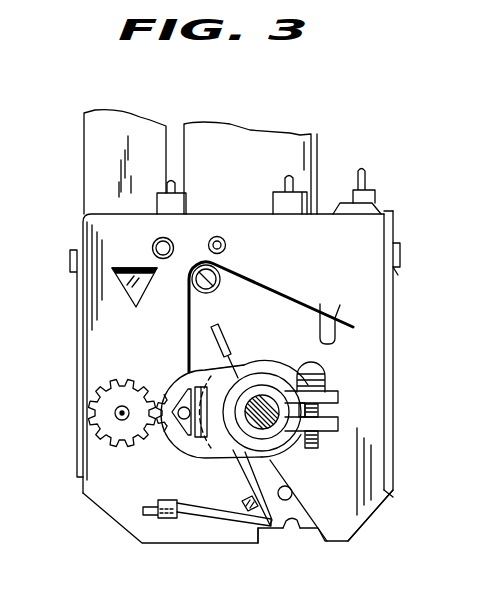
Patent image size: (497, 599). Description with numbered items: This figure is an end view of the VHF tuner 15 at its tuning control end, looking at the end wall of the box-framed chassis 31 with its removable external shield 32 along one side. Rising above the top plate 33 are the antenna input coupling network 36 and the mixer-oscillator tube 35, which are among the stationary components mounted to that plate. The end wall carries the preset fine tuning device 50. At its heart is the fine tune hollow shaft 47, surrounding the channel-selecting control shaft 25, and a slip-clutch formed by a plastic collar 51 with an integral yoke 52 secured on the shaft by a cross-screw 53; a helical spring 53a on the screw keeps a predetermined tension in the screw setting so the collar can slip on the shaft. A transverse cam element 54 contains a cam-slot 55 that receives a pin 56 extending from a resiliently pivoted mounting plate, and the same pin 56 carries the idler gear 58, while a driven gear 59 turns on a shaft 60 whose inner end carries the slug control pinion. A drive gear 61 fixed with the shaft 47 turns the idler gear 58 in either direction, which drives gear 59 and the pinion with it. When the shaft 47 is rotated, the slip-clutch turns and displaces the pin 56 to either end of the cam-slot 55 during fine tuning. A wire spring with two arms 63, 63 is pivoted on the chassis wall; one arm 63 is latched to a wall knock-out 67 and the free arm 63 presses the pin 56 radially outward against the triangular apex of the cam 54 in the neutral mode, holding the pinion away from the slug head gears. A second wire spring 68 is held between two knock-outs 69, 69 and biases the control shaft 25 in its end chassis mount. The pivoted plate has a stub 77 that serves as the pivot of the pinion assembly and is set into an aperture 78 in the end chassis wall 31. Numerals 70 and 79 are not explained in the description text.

The VHF tuner 15 is at (72, 333).
The control shaft 25 is at (264, 406).
The box-framed chassis 31 is at (353, 521).
The removable external shield 32 is at (398, 390).
The top plate 33 is at (240, 200).
The mixer-oscillator tube 35 is at (307, 158).
The antenna input coupling network 36 is at (88, 142).
The fine tune hollow shaft 47 is at (256, 390).
The preset fine tuning device 50 is at (178, 362).
The collar 51 is at (288, 434).
The yoke 52 is at (340, 420).
The cross-screw 53 is at (320, 443).
The helical spring 53a is at (324, 381).
The transverse cam element 54 is at (190, 445).
The cam-slot 55 is at (203, 432).
The pin 56 is at (183, 418).
The idler gear 58 is at (163, 385).
The driven gear 59 is at (107, 417).
The shaft 60 is at (110, 412).
The drive gear 61 is at (286, 448).
The wire spring arm 63 is at (268, 290).
The wall knock-out 67 is at (337, 342).
The second wire spring 68 is at (193, 516).
The knock-out 69 is at (225, 343).
The edge 70 is at (307, 533).
The stub 77 is at (152, 248).
The aperture 78 is at (172, 241).
The tab 79 is at (292, 532).